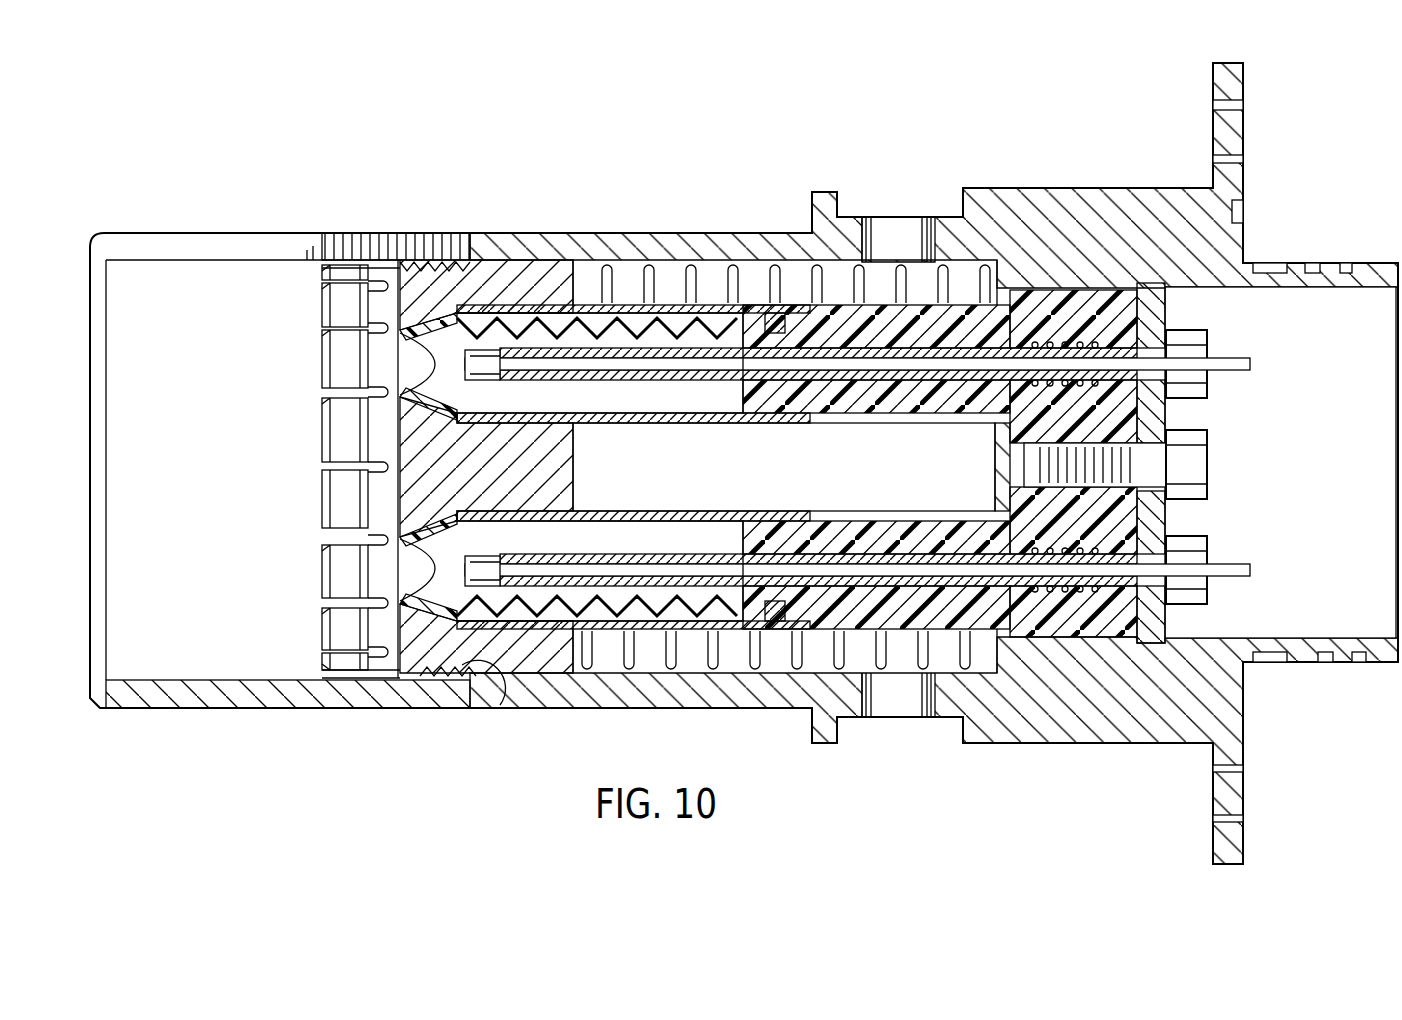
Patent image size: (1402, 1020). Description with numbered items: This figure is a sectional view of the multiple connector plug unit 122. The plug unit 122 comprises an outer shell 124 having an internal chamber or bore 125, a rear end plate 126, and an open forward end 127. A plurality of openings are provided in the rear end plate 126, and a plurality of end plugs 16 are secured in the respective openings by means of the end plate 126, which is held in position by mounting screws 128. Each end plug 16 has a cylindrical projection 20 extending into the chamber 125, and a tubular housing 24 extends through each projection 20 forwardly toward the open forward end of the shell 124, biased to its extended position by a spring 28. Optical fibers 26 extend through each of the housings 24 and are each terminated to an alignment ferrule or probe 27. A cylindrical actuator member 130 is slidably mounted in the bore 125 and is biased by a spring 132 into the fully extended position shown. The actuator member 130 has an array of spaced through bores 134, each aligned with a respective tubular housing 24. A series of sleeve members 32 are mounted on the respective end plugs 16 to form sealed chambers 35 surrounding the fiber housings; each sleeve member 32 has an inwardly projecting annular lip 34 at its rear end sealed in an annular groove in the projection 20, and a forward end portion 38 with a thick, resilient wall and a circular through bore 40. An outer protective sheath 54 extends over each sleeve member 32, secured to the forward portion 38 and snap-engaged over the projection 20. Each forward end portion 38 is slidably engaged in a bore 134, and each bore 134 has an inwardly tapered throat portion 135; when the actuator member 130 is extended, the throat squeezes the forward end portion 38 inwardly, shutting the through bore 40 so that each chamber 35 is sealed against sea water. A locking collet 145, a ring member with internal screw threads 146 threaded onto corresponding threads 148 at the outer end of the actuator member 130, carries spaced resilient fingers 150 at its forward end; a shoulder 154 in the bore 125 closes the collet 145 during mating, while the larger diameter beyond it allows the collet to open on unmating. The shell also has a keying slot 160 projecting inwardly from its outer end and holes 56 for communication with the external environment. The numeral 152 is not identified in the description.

The open forward end 127 is at (92, 285).
The keying slot 160 is at (290, 248).
The internal screw threads 146 is at (440, 262).
The actuator member 130 is at (483, 268).
The chamber 35 is at (505, 347).
The through bores 134 is at (560, 330).
The spring 132 is at (650, 285).
The sleeve member 32 is at (735, 300).
The annular lip 34 is at (768, 328).
The cylindrical projection 20 is at (832, 330).
The holes 56 is at (902, 232).
The outer shell 124 is at (985, 205).
The end plug 16 is at (1020, 312).
The optical fiber 26 is at (1230, 356).
The rear end plate 126 is at (1150, 412).
The mounting screws 128 is at (1195, 452).
The spring 28 is at (985, 467).
The tubular housing 24 is at (870, 372).
The internal chamber or bore 125 is at (793, 480).
The protective sheath 54 is at (627, 518).
The alignment ferrule or probe 27 is at (580, 425).
The forward end portion 38 is at (408, 368).
The resilient fingers 150 is at (328, 487).
The tapered throat portion 135 is at (420, 337).
The locking collet 145 is at (300, 634).
The bottom plate 152 is at (325, 678).
The shoulder 154 is at (358, 678).
The through bore 40 is at (437, 580).
The threads 148 is at (482, 690).
The plug unit 122 is at (873, 735).